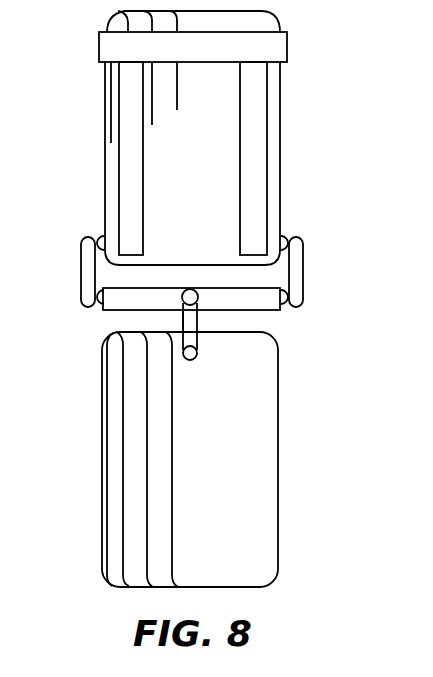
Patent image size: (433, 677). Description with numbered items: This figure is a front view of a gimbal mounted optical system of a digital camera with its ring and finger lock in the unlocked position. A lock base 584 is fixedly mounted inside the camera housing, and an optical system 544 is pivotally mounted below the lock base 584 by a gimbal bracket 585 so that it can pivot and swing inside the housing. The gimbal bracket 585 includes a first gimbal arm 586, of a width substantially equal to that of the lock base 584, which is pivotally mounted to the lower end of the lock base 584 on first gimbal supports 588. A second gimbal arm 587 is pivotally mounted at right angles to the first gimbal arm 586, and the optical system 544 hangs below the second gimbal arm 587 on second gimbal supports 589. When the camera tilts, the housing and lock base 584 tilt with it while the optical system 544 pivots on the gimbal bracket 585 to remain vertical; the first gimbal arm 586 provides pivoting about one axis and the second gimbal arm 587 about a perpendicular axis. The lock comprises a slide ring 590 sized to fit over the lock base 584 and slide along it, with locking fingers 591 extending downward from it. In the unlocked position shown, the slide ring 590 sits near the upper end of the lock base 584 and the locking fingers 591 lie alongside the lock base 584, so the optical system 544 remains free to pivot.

The optical system 544 is at (278, 447).
The lock base 584 is at (280, 126).
The gimbal bracket 585 is at (333, 292).
The first gimbal arm 586 is at (270, 312).
The second gimbal arm 587 is at (198, 303).
The first gimbal supports 588 is at (80, 268).
The second gimbal supports 589 is at (183, 321).
The slide ring 590 is at (287, 44).
The locking fingers 591 is at (240, 178).